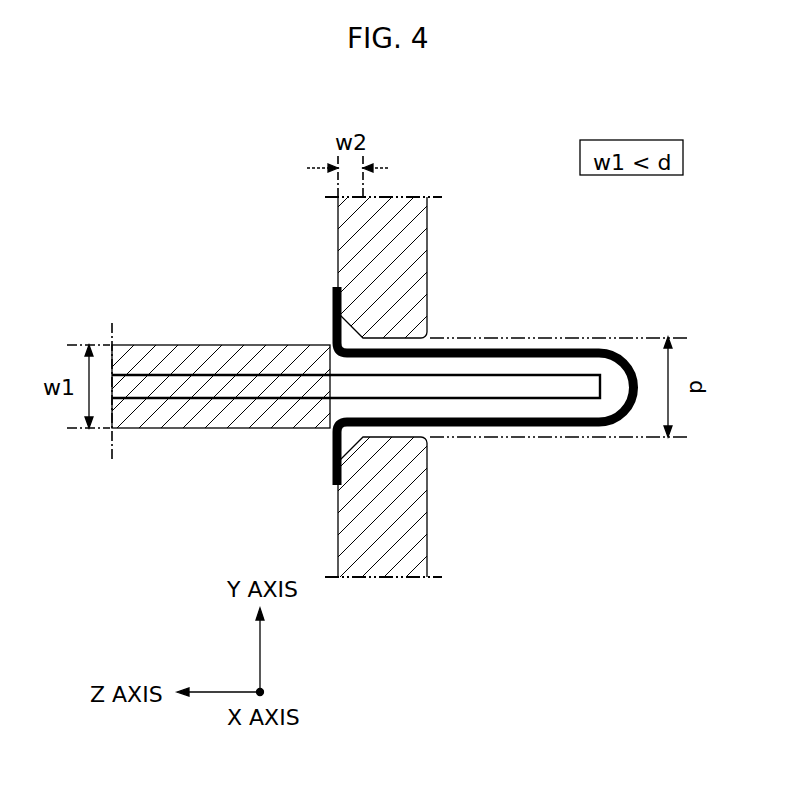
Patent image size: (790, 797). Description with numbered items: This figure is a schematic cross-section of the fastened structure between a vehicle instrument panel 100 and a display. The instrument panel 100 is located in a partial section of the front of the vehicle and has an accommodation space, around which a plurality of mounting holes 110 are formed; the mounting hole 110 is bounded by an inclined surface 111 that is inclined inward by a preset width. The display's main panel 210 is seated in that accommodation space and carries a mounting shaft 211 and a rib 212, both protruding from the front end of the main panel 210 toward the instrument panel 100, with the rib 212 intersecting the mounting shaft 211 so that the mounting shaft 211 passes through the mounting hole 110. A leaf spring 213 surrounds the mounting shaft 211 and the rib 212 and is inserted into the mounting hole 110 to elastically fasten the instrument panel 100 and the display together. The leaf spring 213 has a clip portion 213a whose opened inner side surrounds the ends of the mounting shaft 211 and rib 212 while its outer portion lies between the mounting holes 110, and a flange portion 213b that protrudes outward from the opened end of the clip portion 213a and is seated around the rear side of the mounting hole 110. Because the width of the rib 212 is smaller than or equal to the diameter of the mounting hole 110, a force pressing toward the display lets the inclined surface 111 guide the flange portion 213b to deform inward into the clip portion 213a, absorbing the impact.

The instrument panel 100 is at (447, 397).
The mounting hole 110 is at (410, 437).
The inclined surface 111 is at (417, 333).
The main panel 210 is at (314, 412).
The mounting shaft 211 is at (148, 386).
The rib 212 is at (210, 406).
The leaf spring 213 is at (439, 391).
The clip portion 213a is at (540, 350).
The flange portion 213b is at (333, 317).